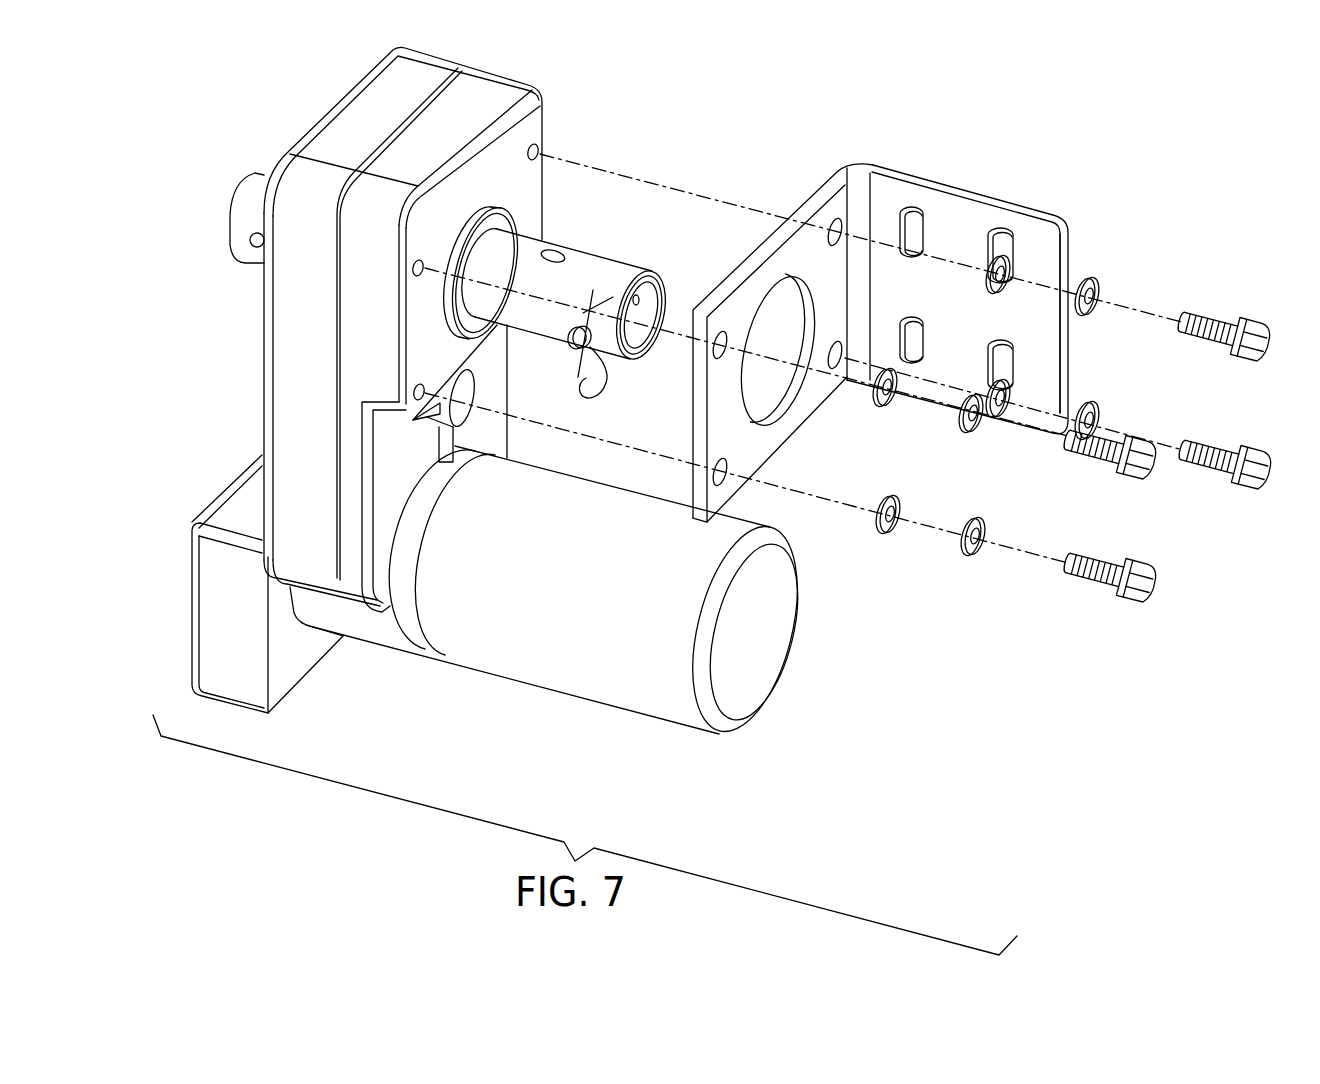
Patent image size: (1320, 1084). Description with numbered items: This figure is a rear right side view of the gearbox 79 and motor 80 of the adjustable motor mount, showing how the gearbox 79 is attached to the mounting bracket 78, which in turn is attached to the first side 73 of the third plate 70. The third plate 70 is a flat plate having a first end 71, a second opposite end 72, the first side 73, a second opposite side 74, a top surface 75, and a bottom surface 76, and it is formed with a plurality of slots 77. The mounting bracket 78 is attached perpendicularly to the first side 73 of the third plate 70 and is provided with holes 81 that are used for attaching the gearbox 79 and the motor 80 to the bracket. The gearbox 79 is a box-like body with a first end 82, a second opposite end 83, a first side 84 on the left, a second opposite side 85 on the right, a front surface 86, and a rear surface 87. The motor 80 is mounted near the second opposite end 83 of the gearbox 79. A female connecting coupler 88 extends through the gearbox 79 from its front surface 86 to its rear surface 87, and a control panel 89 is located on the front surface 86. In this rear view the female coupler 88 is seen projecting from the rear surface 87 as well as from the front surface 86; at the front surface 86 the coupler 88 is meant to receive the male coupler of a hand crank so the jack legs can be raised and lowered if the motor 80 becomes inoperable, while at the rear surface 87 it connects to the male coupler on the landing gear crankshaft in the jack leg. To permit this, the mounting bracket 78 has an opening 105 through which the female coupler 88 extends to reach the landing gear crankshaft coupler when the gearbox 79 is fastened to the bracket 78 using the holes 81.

The third plate 70 is at (957, 218).
The first end 71 is at (893, 166).
The second opposite end 72 is at (940, 400).
The first side 73 is at (872, 298).
The second opposite side 74 is at (1069, 262).
The top surface 75 is at (1074, 207).
The bottom surface 76 is at (1031, 341).
The slots 77 is at (923, 345).
The mounting bracket 78 is at (750, 285).
The gearbox 79 is at (283, 415).
The motor 80 is at (547, 657).
The holes 81 is at (837, 217).
The first end 82 is at (378, 85).
The second opposite end 83 is at (353, 560).
The first side 84 is at (510, 353).
The second opposite side 85 is at (262, 458).
The front surface 86 is at (232, 344).
The rear surface 87 is at (512, 160).
The female connecting coupler 88 is at (260, 183).
The control panel 89 is at (217, 607).
The opening 105 is at (773, 410).